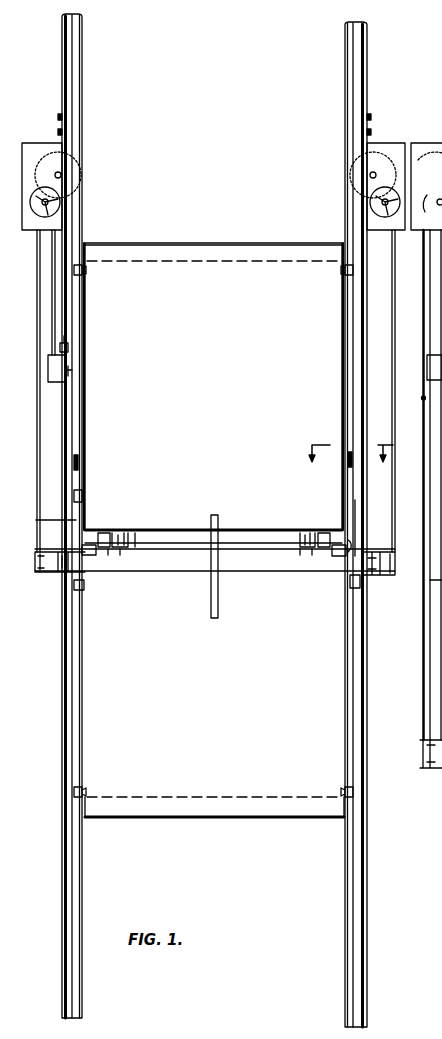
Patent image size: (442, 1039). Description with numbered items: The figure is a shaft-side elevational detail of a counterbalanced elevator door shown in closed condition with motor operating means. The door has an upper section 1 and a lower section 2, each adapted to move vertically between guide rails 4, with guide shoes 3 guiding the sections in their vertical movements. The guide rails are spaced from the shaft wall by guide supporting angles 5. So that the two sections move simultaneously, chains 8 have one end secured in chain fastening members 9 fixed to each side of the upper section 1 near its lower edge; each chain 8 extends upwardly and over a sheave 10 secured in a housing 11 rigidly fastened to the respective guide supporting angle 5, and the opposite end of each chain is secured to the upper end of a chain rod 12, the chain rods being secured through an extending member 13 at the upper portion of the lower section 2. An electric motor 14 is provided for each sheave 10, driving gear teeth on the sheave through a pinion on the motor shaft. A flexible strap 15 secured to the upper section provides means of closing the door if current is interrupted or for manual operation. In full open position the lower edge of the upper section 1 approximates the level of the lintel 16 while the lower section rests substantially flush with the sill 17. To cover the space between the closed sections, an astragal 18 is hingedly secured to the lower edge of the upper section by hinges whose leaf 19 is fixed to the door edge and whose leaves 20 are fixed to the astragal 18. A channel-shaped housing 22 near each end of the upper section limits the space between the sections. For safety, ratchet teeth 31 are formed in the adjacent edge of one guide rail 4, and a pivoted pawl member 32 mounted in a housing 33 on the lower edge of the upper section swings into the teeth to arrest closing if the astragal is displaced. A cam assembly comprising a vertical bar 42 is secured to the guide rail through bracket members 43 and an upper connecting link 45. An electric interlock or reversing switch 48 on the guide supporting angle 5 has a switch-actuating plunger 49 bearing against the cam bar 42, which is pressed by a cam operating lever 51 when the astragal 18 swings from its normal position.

The upper section 1 is at (168, 275).
The lower section 2 is at (196, 800).
The guide shoes 3 is at (72, 270).
The guide rails 4 is at (74, 78).
The guide supporting angles 5 is at (82, 40).
The chains 8 is at (82, 413).
The chain fastening members 9 is at (76, 479).
The sheaves 10 is at (77, 178).
The housing 11 is at (34, 150).
The chain rods 12 is at (38, 403).
The extending member 13 is at (50, 563).
The electric motor 14 is at (50, 208).
The flexible strap 15 is at (218, 605).
The lintel 16 is at (211, 263).
The sill 17 is at (273, 797).
The astragal 18 is at (245, 538).
The hinge leaf 19 is at (124, 537).
The hinge leaves 20 is at (120, 550).
The channel-shaped housing 22 is at (105, 533).
The ratchet teeth 31 is at (358, 517).
The pivoted pawl member 32 is at (354, 546).
The housing 33 is at (340, 553).
The vertical bar 42 is at (42, 520).
The bracket members 43 is at (435, 580).
The upper connecting link 45 is at (70, 349).
The electric interlock or reversing switch 48 is at (48, 372).
The switch-actuating plunger 49 is at (72, 372).
The cam operating lever 51 is at (86, 553).